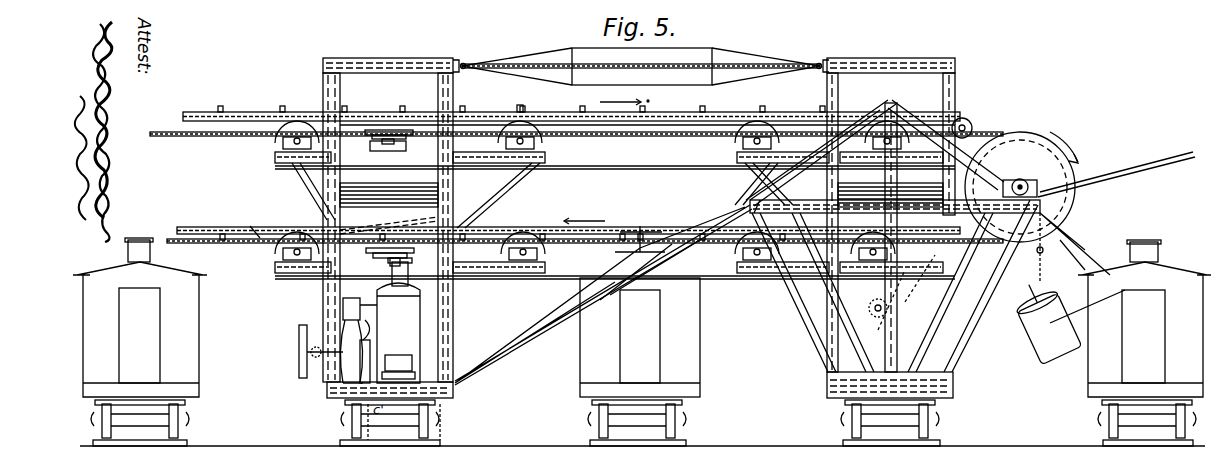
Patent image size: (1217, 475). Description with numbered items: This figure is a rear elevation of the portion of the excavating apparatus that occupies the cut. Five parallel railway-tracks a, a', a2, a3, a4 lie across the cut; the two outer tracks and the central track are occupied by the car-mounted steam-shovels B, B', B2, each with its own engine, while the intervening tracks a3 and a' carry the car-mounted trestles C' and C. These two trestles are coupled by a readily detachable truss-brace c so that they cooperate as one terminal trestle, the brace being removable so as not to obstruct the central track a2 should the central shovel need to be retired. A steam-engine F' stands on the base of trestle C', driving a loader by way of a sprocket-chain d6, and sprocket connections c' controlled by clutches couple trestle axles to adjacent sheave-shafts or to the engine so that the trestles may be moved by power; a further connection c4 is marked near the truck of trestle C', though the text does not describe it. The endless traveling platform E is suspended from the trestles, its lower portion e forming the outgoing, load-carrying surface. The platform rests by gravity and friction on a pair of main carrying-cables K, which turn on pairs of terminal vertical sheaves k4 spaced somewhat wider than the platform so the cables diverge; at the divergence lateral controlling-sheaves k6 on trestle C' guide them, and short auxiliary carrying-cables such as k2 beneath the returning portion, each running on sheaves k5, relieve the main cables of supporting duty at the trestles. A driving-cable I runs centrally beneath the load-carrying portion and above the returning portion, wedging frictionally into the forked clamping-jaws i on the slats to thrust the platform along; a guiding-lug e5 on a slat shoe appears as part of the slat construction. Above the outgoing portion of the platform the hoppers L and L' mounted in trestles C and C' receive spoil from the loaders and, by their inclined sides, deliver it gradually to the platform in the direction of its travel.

The car-mounted trestle C' is at (388, 209).
The car-mounted trestle C is at (893, 204).
The driving-cable I is at (200, 131).
The cable-clamping jaw i is at (654, 216).
The endless traveling platform E is at (568, 164).
The lower portion of the platform e is at (465, 221).
The lateral controlling-sheaves k6 is at (387, 130).
The auxiliary cable sheaves k5 is at (784, 145).
The main carrying-cable K is at (262, 252).
The auxiliary carrying-cable k2 is at (688, 126).
The hopper L' is at (389, 187).
The hopper L is at (890, 185).
The terminal vertical sheaves k4 is at (1080, 187).
The truss-brace c is at (603, 295).
The sprocket-chain c' is at (945, 289).
The car-mounted steam-shovel B2 is at (140, 317).
The car-mounted steam-shovel B' is at (653, 337).
The car-mounted steam-shovel B is at (1144, 318).
The steam-engine F' is at (380, 320).
The sprocket-chain d6 is at (316, 365).
The railway-track a4 is at (140, 434).
The railway-track a3 is at (390, 424).
The railway-track a2 is at (637, 433).
The railway-track a' is at (890, 419).
The railway-track a is at (1147, 434).
The cable guide c4 is at (370, 439).
The guiding-lug e5 is at (438, 439).